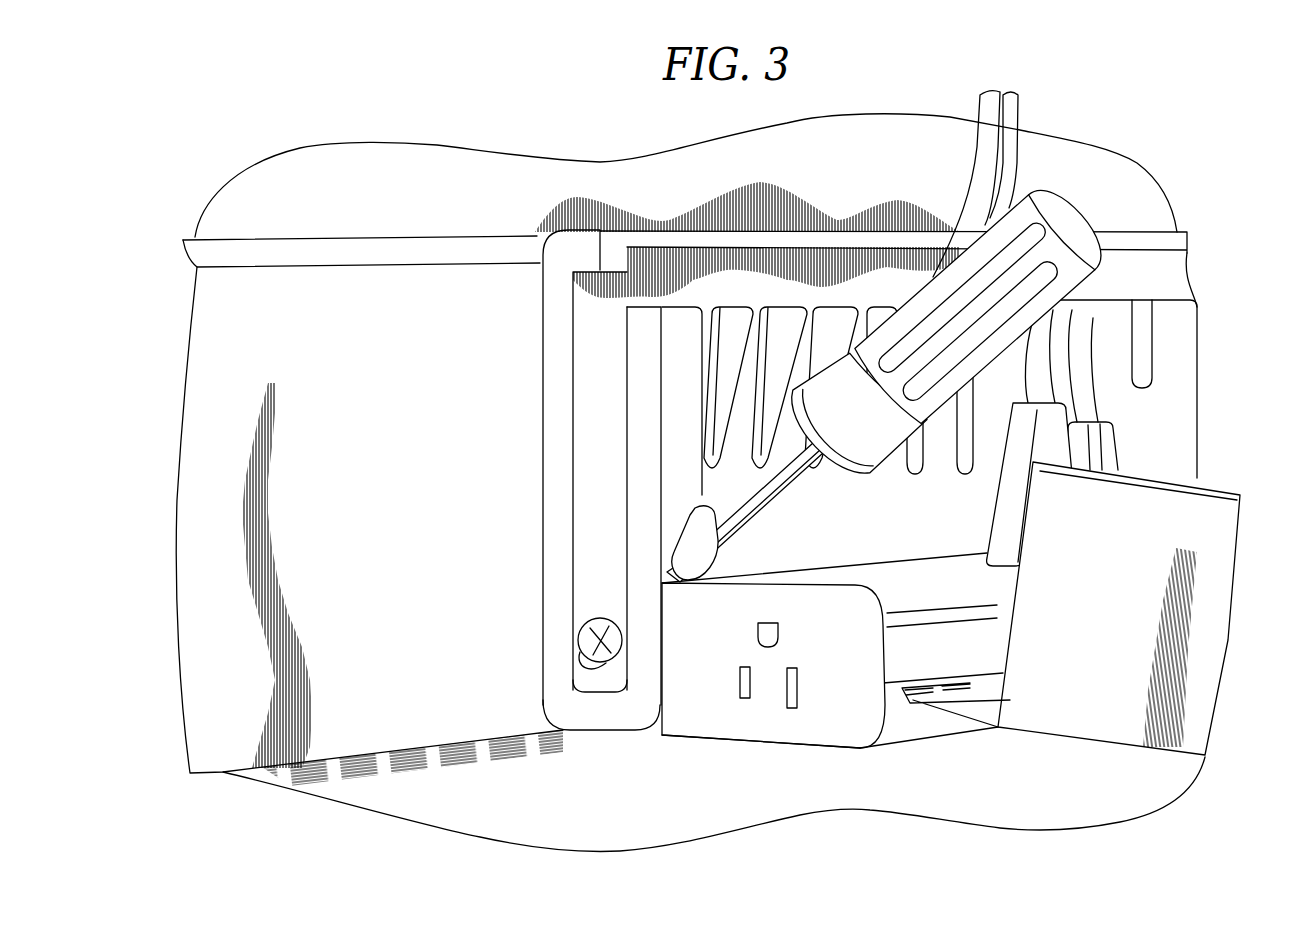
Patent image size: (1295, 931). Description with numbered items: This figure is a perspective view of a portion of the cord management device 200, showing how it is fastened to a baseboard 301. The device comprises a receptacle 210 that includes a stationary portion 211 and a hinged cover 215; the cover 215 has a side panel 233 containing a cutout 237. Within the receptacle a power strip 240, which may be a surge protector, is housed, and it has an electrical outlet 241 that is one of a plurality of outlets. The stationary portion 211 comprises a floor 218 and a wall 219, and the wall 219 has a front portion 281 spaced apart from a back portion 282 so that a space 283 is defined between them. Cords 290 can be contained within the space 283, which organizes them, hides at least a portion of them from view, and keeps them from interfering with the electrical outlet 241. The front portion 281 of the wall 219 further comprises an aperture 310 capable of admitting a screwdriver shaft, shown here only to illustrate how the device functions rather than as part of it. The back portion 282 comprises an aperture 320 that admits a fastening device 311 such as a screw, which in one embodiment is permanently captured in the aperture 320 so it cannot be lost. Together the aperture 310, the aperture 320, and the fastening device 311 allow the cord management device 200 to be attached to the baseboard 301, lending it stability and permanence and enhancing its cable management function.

The cord management device 200 is at (553, 125).
The receptacle 210 is at (1128, 200).
The stationary portion 211 is at (680, 775).
The cover 215 is at (1120, 742).
The floor 218 is at (770, 745).
The wall 219 is at (557, 283).
The side panel 233 is at (1152, 552).
The cutout 237 is at (970, 684).
The power strip 240 is at (1010, 565).
The electrical outlet 241 is at (780, 632).
The front portion 281 is at (673, 517).
The back portion 282 is at (553, 532).
The space 283 is at (612, 410).
The cords 290 is at (703, 433).
The baseboard 301 is at (350, 332).
The aperture 310 is at (705, 512).
The fastening device 311 is at (620, 677).
The aperture 320 is at (590, 660).